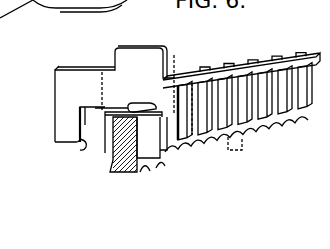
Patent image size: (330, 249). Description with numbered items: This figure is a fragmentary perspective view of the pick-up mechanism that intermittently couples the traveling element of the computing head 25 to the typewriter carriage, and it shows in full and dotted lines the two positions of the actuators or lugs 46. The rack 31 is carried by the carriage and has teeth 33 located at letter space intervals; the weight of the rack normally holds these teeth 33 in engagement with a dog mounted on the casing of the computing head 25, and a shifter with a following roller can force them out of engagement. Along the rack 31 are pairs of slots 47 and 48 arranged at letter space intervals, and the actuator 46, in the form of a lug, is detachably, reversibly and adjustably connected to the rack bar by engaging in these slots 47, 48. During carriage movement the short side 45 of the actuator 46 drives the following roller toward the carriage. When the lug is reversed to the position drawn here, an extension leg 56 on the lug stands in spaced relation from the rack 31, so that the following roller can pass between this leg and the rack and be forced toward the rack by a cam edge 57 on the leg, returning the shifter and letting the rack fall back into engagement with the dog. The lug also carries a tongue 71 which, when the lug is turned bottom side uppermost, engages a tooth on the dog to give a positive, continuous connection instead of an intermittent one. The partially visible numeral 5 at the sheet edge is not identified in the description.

The partial element (cut off at sheet edge) 5 is at (16, 21).
The computing head 25 is at (126, 0).
The actuator 46 is at (115, 95).
The tongue 71 is at (142, 62).
The extension leg 56 is at (55, 123).
The cam edge 57 is at (83, 148).
The rack 31 is at (114, 158).
The teeth 33 is at (158, 158).
The slots 48 is at (233, 70).
The short side 45 is at (192, 147).
The slots 47 is at (278, 112).